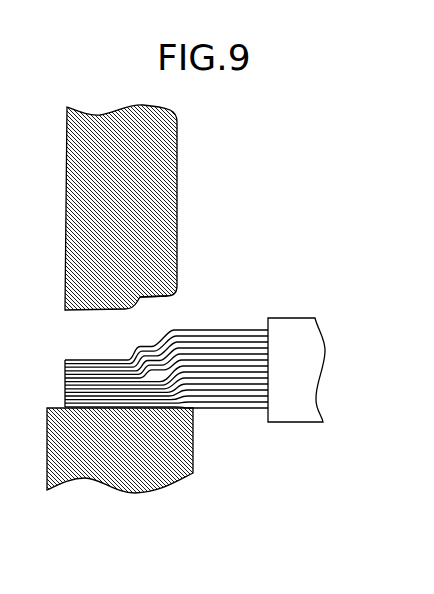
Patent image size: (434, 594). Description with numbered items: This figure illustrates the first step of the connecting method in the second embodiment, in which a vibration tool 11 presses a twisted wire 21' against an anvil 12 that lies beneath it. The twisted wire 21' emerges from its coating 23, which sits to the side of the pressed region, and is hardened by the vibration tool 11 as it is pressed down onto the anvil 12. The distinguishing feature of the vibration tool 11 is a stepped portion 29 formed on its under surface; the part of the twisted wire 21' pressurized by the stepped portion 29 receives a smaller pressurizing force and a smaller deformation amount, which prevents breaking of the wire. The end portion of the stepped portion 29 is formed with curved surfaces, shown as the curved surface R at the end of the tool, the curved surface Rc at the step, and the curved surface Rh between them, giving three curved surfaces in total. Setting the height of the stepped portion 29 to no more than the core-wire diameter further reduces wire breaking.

The vibration tool 11 is at (180, 177).
The anvil 12 is at (147, 495).
The twisted wire 21' is at (172, 413).
The coating 23 is at (288, 408).
The stepped portion 29 is at (156, 299).
The curved surface of end portion of vibration tool under surface R is at (168, 288).
The curved surface of under surface of vibration tool Rc is at (133, 302).
The curved surface of under surface of vibration tool Rh is at (150, 298).